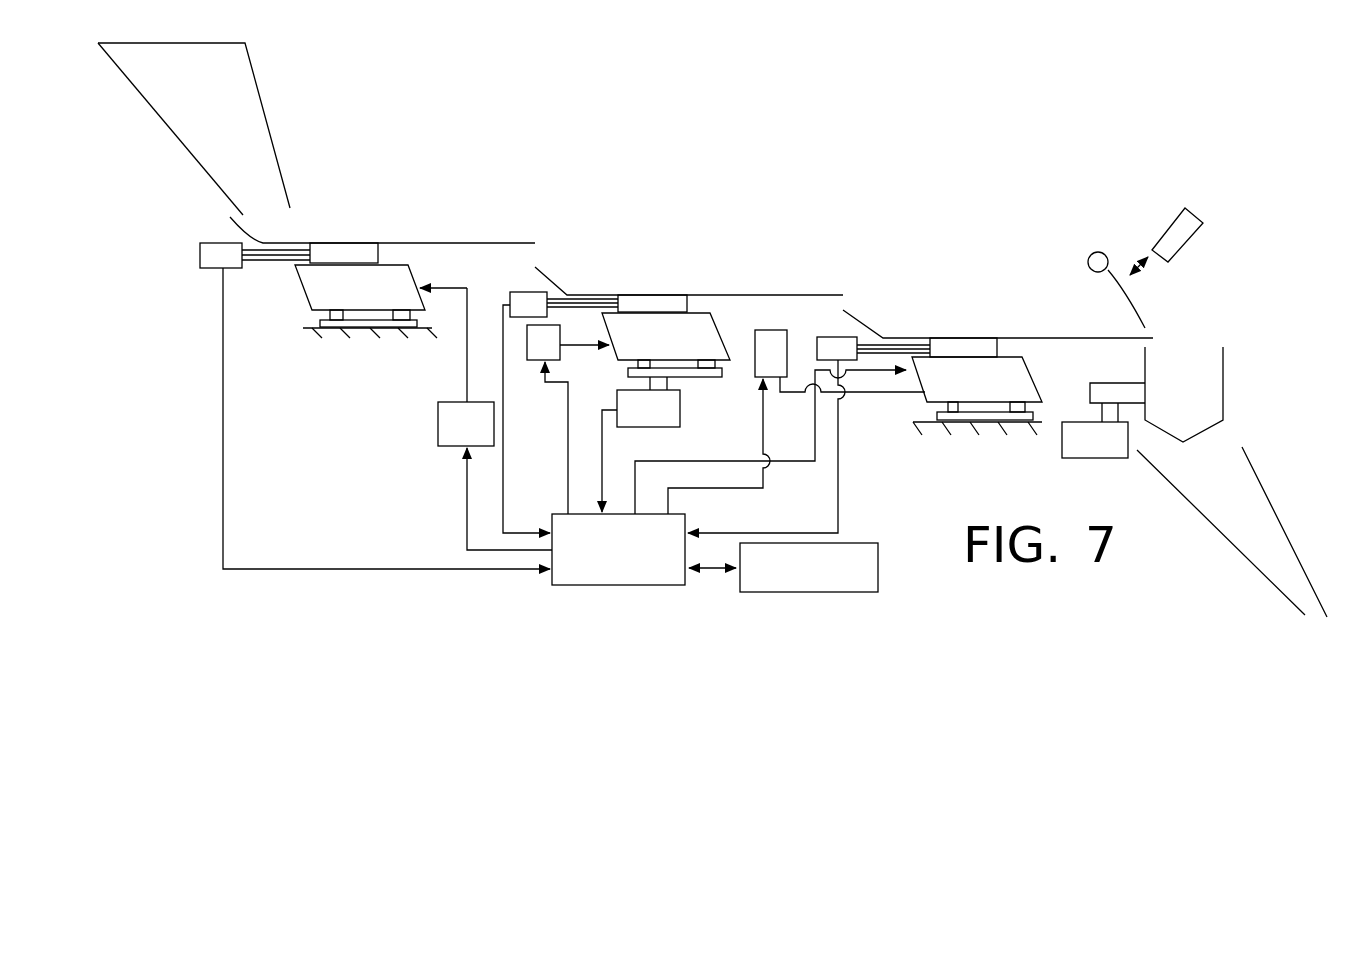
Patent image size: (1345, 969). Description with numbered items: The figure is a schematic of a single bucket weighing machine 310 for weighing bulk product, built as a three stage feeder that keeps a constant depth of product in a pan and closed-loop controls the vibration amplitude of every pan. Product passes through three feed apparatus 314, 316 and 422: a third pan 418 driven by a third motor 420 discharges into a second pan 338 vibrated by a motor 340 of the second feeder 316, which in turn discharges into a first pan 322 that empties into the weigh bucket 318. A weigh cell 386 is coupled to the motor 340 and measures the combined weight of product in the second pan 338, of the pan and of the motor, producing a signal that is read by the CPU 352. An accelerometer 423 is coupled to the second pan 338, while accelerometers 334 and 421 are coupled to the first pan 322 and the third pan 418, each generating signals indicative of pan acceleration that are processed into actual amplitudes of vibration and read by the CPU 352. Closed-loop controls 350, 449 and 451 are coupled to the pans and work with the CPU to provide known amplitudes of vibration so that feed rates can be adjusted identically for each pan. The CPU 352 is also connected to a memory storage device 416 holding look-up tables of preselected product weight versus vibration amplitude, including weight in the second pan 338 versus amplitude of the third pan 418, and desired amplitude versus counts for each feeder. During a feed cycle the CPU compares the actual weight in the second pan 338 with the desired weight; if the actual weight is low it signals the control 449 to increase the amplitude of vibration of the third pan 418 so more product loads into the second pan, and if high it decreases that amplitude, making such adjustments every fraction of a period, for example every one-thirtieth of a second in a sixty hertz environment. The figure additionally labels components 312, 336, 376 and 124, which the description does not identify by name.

The single bucket weighing machine 310 is at (702, 216).
The hopper 312 is at (265, 112).
The feed apparatus 314 is at (955, 316).
The second feeder 316 is at (596, 271).
The weigh bucket 318 is at (1223, 400).
The first pan 322 is at (1073, 337).
The accelerometer 334 is at (828, 337).
The chute actuator 336 is at (1080, 458).
The second pan 338 is at (693, 293).
The motor 340 is at (701, 314).
The closed-loop control 350 is at (772, 330).
The CPU 352 is at (612, 586).
The label applicator 376 is at (1173, 220).
The weigh cell 386 is at (708, 403).
The memory storage device 416 is at (807, 592).
The third pan 418 is at (418, 243).
The third motor 420 is at (306, 293).
The accelerometer 421 is at (215, 243).
The feed apparatus 422 is at (340, 224).
The accelerometer 423 is at (527, 292).
The closed-loop control 449 is at (446, 402).
The closed-loop control 451 is at (562, 347).
The weigh platform 124 is at (927, 398).